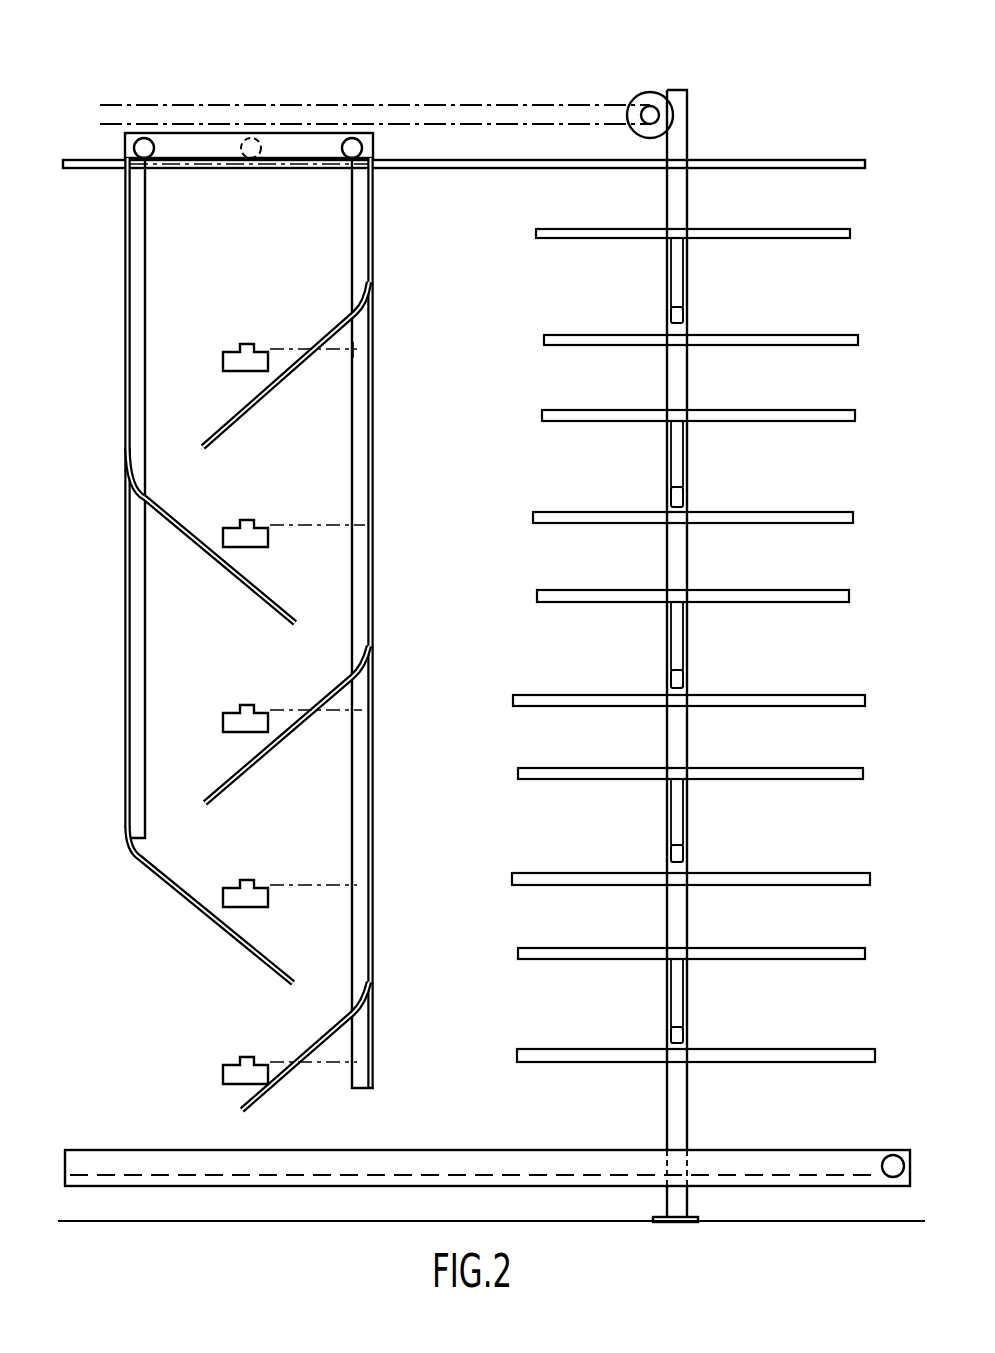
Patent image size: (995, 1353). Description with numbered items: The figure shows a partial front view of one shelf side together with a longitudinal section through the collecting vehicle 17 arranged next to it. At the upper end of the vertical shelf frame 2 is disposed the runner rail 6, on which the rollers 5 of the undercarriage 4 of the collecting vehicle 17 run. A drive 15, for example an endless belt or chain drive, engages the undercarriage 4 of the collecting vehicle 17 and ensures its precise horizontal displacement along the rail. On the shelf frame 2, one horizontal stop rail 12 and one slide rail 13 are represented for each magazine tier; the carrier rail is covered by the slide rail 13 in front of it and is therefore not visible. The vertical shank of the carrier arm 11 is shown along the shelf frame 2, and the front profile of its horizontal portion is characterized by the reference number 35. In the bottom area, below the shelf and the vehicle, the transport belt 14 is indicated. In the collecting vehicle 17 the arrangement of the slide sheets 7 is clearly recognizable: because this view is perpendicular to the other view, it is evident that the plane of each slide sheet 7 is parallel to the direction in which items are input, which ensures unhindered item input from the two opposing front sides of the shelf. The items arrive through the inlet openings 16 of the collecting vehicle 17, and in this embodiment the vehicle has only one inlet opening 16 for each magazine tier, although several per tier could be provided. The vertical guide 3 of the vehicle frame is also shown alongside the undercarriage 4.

The shelf frame 2 is at (680, 1108).
The left guide rail of carriage 3 is at (140, 219).
The undercarriage 4 is at (288, 143).
The rollers 5 is at (352, 138).
The runner rail 6 is at (830, 160).
The slide sheet 7 is at (213, 558).
The carrier arm 11 is at (676, 622).
The stop rail 12 is at (820, 228).
The slide rail 13 is at (812, 334).
The transport belt 14 is at (858, 1150).
The drive 15 is at (632, 97).
The inlet opening 16 is at (226, 361).
The collecting vehicle 17 is at (168, 938).
The front profile of the horizontal portion of the carrier arm 35 is at (683, 675).